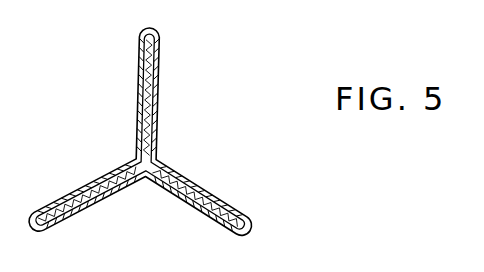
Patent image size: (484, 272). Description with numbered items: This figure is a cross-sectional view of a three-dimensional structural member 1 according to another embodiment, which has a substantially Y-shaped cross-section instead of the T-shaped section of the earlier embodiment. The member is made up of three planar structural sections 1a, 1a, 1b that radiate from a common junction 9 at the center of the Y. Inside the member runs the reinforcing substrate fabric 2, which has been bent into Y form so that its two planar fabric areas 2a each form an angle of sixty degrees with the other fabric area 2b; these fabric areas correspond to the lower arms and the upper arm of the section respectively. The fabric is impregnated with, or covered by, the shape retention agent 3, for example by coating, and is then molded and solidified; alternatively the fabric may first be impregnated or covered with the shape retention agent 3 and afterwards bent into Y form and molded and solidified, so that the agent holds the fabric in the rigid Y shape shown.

The three-dimensional structural member 1 is at (252, 58).
The planar structural section 1a is at (58, 205).
The planar structural section 1b is at (144, 55).
The reinforcing substrate fabric 2 is at (155, 112).
The planar fabric area 2a is at (76, 207).
The fabric area 2b is at (143, 93).
The shape retention agent 3 is at (152, 77).
The junction portion 9 is at (157, 163).